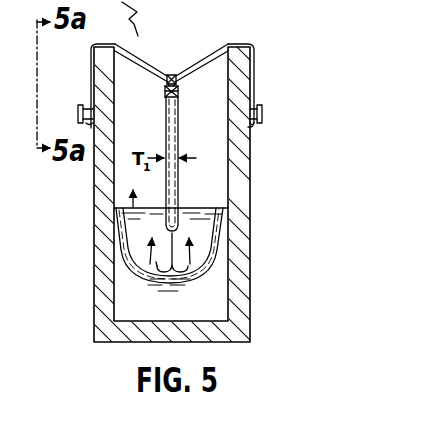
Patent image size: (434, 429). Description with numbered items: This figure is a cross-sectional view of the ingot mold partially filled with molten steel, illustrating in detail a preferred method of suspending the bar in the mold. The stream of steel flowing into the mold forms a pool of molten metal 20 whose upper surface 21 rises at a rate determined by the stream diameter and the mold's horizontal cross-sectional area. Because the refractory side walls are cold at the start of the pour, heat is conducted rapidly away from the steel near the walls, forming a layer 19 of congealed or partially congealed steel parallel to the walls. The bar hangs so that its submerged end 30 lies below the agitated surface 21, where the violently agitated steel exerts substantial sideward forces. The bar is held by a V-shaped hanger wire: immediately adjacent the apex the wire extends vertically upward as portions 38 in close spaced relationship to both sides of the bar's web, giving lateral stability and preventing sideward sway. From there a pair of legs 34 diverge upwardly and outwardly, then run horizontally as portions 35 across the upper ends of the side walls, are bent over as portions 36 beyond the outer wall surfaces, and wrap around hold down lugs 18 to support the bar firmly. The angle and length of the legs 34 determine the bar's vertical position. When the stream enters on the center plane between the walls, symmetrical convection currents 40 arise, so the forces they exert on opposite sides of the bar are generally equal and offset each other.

The lugs 18 is at (262, 116).
The layer of congealed steel 19 is at (218, 240).
The pool of molten metal 20 is at (197, 238).
The upper surface 21 is at (196, 207).
The submerged end 30 is at (167, 227).
The legs 34 is at (201, 57).
The horizontal portions 35 is at (107, 44).
The bent-over portions 36 is at (91, 77).
The vertical portions 38 is at (164, 82).
The convection currents 40 is at (157, 267).